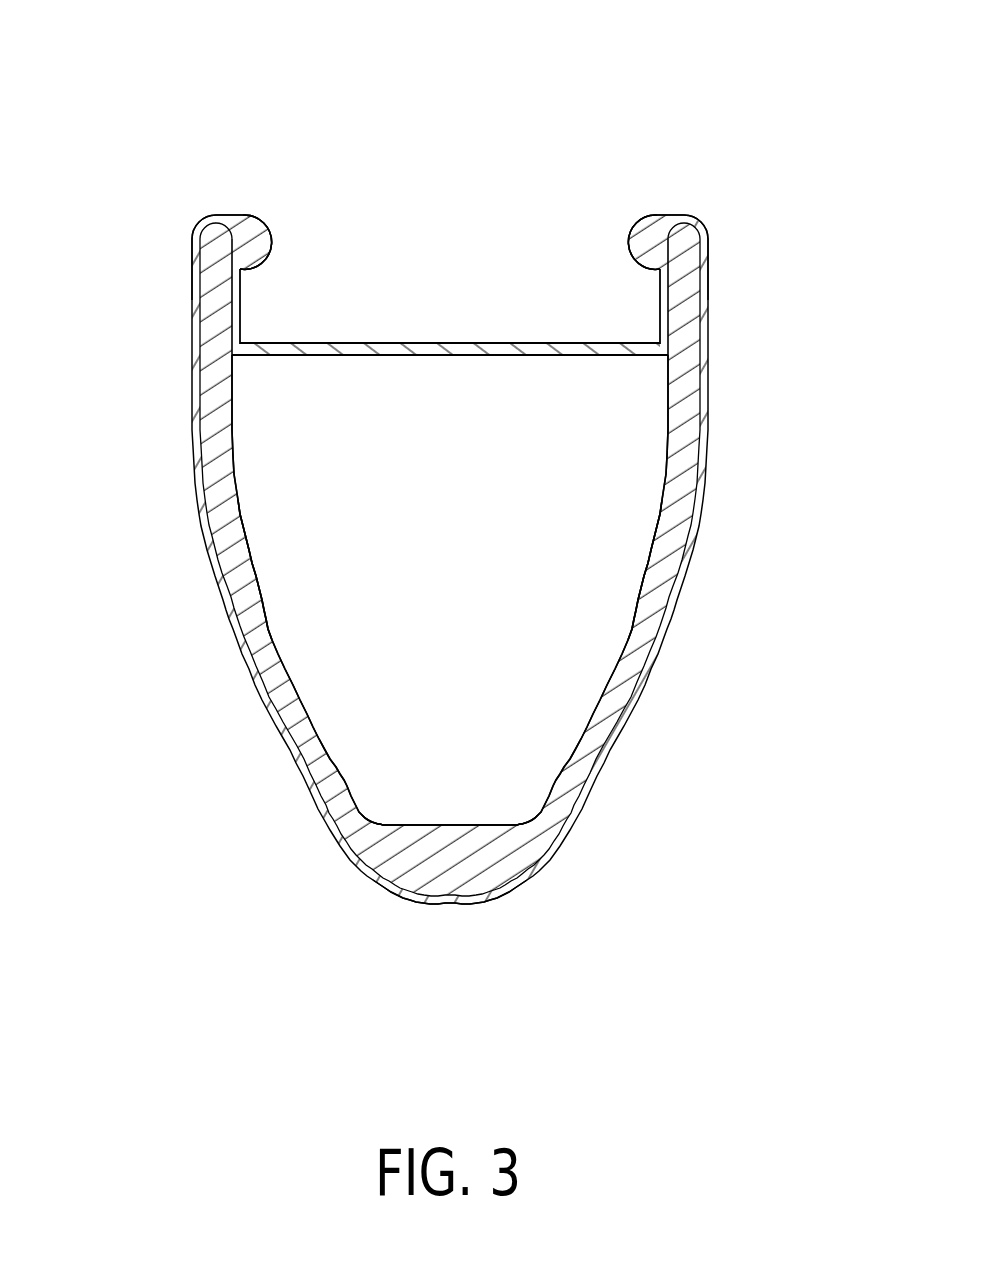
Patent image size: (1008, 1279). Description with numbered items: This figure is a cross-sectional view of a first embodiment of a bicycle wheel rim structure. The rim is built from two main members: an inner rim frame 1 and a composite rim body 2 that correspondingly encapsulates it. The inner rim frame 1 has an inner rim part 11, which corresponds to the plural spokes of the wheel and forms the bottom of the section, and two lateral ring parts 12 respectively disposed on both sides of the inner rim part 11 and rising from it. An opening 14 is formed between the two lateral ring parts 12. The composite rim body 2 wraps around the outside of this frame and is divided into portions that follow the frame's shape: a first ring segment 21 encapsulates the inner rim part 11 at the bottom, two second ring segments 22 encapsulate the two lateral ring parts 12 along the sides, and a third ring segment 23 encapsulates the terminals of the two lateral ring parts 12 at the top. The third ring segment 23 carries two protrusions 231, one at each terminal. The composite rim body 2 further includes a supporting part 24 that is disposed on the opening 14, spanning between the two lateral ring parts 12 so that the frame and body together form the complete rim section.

The inner rim frame 1 is at (634, 657).
The inner rim part 11 is at (470, 845).
The lateral ring parts 12 is at (248, 607).
The opening 14 is at (416, 405).
The composite rim body 2 is at (193, 508).
The first ring segment 21 is at (460, 905).
The second ring segments 22 is at (706, 428).
The third ring segment 23 is at (225, 208).
The protrusions 231 is at (265, 228).
The supporting part 24 is at (487, 345).